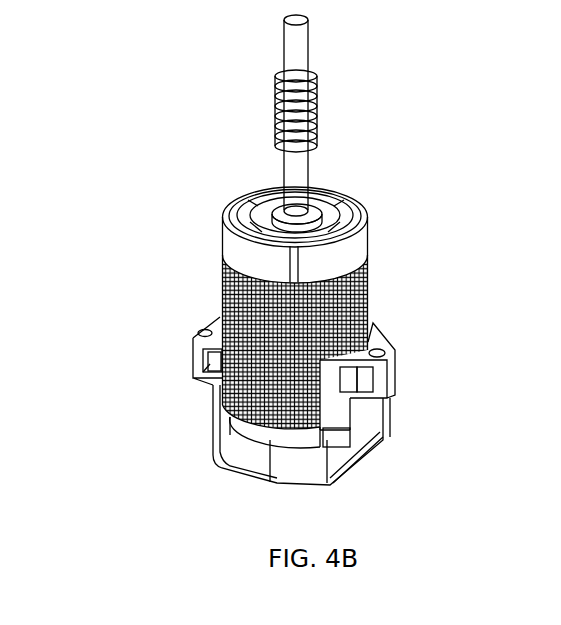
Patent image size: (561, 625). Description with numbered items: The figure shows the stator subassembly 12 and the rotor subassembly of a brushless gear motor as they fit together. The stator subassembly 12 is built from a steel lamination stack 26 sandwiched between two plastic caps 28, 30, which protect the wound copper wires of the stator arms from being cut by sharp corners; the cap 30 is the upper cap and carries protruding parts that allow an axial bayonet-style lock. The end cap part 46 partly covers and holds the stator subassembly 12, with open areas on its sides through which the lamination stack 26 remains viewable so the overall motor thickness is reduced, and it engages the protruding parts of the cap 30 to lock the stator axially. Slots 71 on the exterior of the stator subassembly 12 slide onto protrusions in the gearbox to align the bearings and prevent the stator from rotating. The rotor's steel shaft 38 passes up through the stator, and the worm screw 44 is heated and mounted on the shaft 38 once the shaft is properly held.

The steel shaft 38 is at (298, 45).
The worm screw 44 is at (315, 95).
The plastic cap 28 is at (352, 250).
The stator subassembly 12 is at (365, 288).
The steel lamination stack 26 is at (367, 315).
The slots 71 is at (288, 308).
The plastic cap 30 is at (257, 428).
The end cap part 46 is at (333, 412).